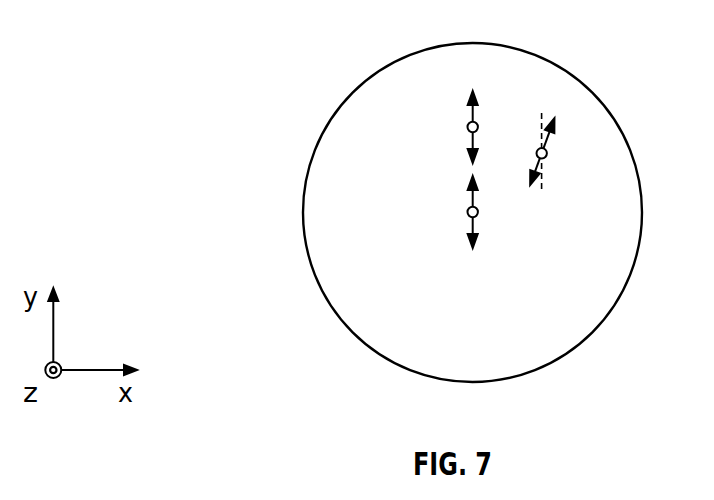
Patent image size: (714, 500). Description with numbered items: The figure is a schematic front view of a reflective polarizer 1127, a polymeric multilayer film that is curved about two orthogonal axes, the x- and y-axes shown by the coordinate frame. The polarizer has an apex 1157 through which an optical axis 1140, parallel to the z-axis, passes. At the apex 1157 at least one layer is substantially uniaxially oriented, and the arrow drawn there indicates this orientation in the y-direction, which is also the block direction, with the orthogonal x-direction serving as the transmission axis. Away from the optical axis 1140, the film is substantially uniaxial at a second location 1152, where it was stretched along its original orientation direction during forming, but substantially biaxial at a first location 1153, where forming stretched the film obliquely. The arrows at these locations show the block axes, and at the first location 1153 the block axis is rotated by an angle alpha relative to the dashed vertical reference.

The reflective polarizer 1127 is at (301, 38).
The second location 1152 is at (467, 127).
The first location 1153 is at (546, 157).
The optical axis 1140 is at (467, 212).
The apex 1157 is at (478, 212).